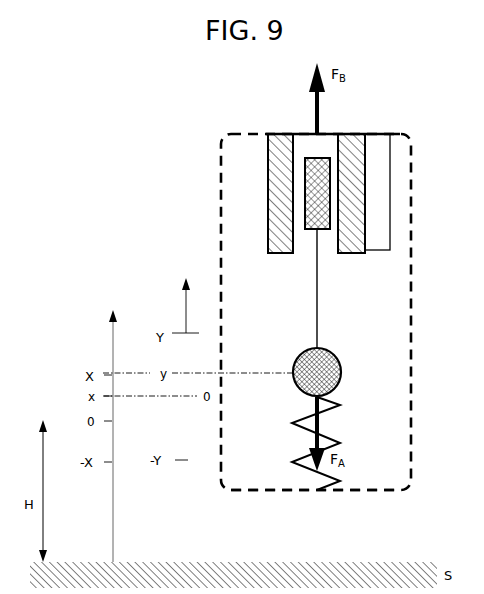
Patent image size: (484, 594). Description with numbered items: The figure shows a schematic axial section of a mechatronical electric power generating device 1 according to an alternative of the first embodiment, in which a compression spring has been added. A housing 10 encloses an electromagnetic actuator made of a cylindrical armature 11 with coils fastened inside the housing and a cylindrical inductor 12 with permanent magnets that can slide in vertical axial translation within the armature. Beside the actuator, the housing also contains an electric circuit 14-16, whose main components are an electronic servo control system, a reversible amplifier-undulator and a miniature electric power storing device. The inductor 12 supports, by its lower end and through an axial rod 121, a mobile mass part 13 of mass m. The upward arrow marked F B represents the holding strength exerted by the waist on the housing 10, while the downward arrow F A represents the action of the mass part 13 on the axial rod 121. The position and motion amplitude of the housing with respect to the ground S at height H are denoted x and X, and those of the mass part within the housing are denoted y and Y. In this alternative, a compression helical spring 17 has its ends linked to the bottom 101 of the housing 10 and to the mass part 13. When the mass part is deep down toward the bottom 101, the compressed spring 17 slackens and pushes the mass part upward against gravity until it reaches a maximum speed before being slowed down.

The mechatronical electric power generating device 1 is at (122, 107).
The housing 10 is at (407, 288).
The bottom of the housing 101 is at (366, 492).
The cylindrical armature 11 is at (352, 134).
The cylindrical inductor 12 is at (308, 158).
The electric circuit 14-16 is at (380, 183).
The axial rod 121 is at (318, 330).
The mobile mass part 13 is at (341, 376).
The compression helical spring 17 is at (340, 406).